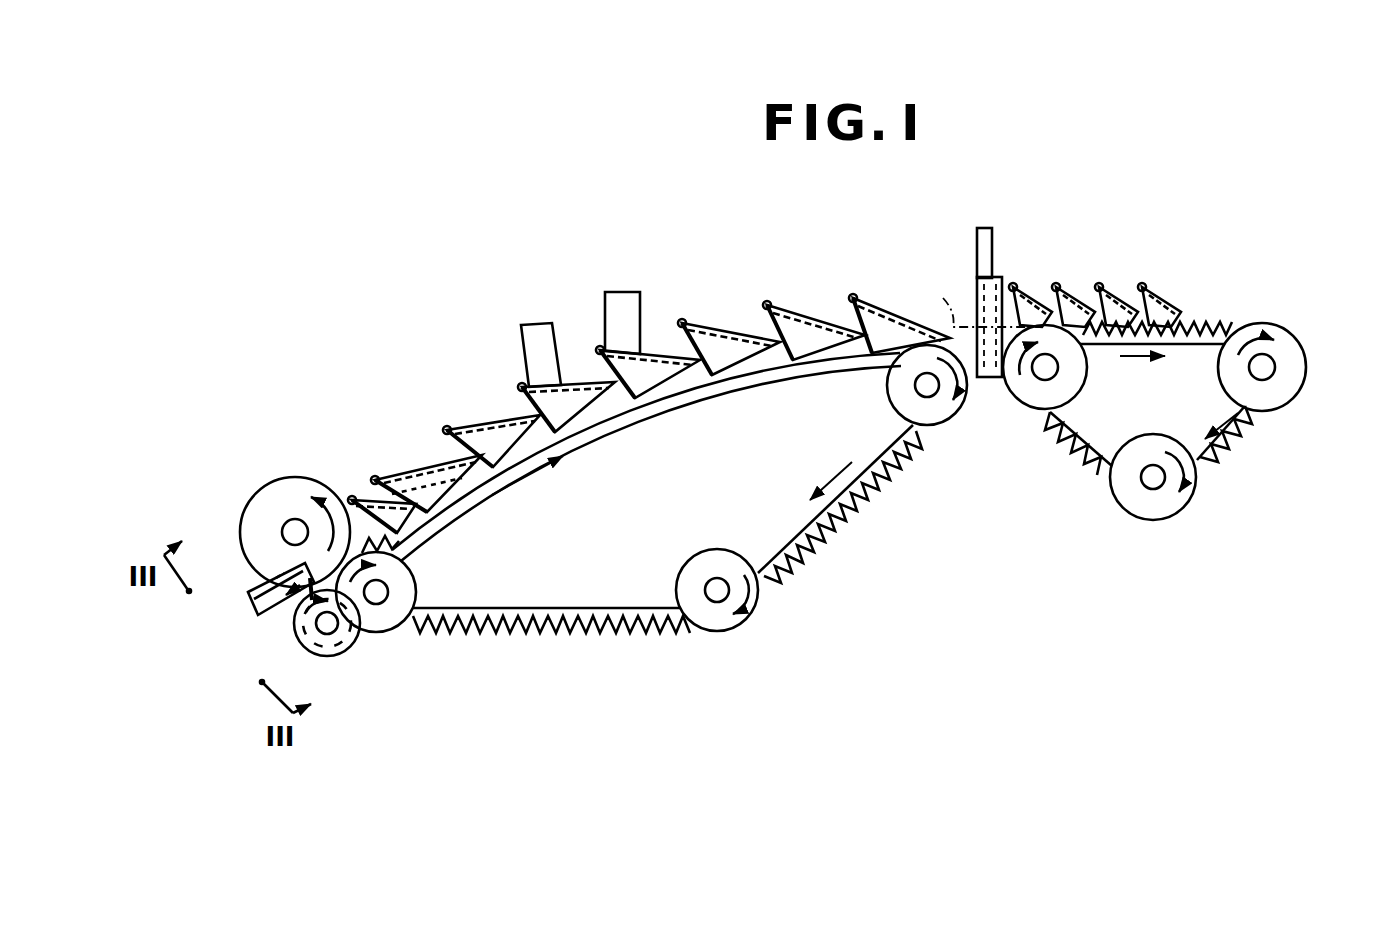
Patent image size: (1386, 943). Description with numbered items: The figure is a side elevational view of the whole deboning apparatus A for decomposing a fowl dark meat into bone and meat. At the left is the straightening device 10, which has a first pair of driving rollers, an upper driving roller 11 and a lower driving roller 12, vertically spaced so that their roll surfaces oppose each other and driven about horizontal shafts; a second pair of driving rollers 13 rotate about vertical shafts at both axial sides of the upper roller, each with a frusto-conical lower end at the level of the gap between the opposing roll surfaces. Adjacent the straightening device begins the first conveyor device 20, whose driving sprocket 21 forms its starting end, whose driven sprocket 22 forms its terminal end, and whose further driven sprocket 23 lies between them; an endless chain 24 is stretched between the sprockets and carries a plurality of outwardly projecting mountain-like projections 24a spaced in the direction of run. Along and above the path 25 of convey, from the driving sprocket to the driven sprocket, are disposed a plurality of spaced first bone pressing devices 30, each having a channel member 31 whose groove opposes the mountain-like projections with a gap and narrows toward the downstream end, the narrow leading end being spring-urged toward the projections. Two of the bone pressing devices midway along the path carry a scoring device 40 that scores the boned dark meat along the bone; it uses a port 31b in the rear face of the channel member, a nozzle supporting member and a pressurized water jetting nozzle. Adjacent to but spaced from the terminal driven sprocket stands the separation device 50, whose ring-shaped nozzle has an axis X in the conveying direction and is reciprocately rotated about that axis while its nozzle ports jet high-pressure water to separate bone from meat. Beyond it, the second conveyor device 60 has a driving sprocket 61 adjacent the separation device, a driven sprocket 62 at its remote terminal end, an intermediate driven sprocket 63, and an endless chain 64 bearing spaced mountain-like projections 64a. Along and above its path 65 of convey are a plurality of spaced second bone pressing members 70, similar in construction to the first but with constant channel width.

The straightening device 10 is at (301, 590).
The upper driving roller 11 is at (262, 488).
The lower driving roller 12 is at (352, 652).
The second pair of driving rollers 13 is at (254, 616).
The first conveyor device 20 is at (651, 549).
The driving sprocket 21 is at (416, 590).
The driven sprocket 22 is at (897, 404).
The driven sprocket 23 is at (737, 556).
The endless chain 24 is at (642, 528).
The mountain-like projections 24a is at (408, 552).
The path of convey 25 is at (600, 440).
The first bone pressing device 30 is at (628, 361).
The channel member 31 is at (729, 320).
The port 31b is at (704, 333).
The scoring device 40 is at (530, 318).
The separation device 50 is at (975, 296).
The second conveyor device 60 is at (1141, 422).
The driving sprocket 61 is at (1008, 385).
The driven sprocket 62 is at (1266, 323).
The driven sprocket 63 is at (1166, 520).
The endless chain 64 is at (1174, 416).
The mountain-like projections 64a is at (1243, 445).
The path of convey 65 is at (1188, 354).
The second bone pressing member 70 is at (1031, 289).
The deboning apparatus A is at (779, 628).
The axis X is at (981, 299).